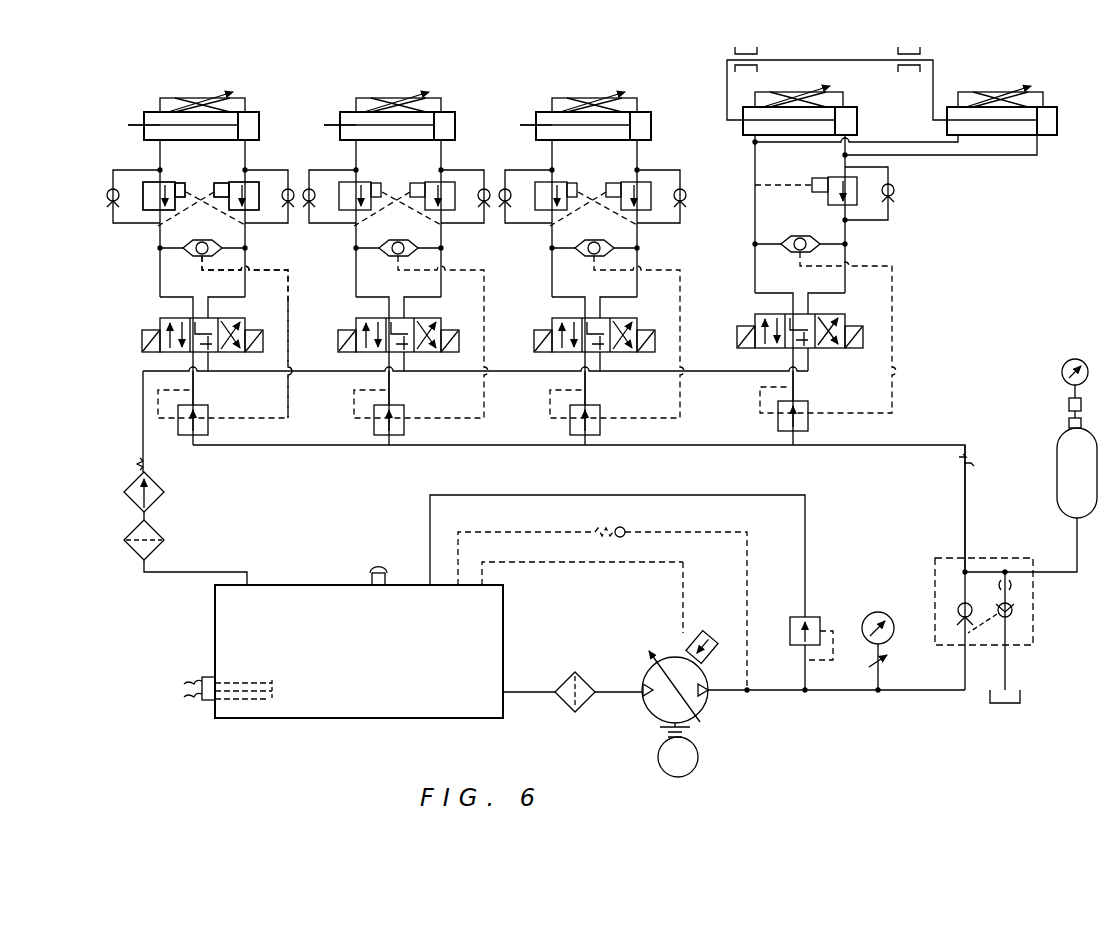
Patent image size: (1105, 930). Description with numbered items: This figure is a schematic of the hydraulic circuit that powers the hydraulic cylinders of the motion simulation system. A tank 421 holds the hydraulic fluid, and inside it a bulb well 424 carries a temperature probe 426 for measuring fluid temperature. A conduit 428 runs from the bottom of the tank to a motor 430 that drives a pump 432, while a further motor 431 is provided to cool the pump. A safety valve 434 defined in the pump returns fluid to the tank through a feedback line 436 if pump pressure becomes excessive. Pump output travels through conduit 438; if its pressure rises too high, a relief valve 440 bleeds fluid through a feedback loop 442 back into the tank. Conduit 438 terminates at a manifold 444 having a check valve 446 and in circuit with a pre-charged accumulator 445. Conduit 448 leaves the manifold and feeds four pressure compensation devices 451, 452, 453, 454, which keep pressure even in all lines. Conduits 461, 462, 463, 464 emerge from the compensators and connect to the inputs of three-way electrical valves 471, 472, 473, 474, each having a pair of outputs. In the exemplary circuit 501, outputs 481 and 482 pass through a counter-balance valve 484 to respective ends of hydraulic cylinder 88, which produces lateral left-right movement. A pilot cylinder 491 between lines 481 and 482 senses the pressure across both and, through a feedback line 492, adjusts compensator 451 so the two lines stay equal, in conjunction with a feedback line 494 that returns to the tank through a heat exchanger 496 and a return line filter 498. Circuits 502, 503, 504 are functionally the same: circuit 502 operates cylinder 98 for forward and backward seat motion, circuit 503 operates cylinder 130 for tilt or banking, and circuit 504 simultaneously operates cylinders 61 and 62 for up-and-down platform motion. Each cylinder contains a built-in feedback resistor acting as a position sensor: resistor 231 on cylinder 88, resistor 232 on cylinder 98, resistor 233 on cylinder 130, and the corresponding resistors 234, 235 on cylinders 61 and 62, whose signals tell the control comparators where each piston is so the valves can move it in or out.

The feedback resistor 231 is at (247, 100).
The feedback resistor 232 is at (443, 100).
The feedback resistor 233 is at (640, 100).
The hydraulic cylinder 234 is at (843, 100).
The hydraulic cylinder 235 is at (1043, 100).
The hydraulic cylinder 88 is at (144, 126).
The hydraulic cylinder 98 is at (340, 136).
The hydraulic cylinder 130 is at (540, 137).
The hydraulic cylinder 61 is at (745, 140).
The hydraulic cylinder 62 is at (1050, 138).
The output line 481 is at (160, 165).
The output line 482 is at (247, 160).
The counter-balance valve 484 is at (143, 238).
The pilot cylinder 491 is at (194, 246).
The circuit 501 is at (259, 262).
The circuit 502 is at (452, 244).
The circuit 503 is at (650, 244).
The circuit 504 is at (856, 240).
The feedback line 492 is at (289, 305).
The three-way electrical valve 471 is at (210, 351).
The three-way electrical valve 472 is at (406, 351).
The three-way electrical valve 473 is at (602, 351).
The three-way electrical valve 474 is at (810, 347).
The conduit 461 is at (196, 390).
The conduit 462 is at (392, 390).
The conduit 463 is at (588, 390).
The conduit 464 is at (796, 386).
The pressure compensation device 451 is at (208, 433).
The pressure compensation device 452 is at (404, 433).
The pressure compensation device 453 is at (600, 433).
The pressure compensation device 454 is at (808, 429).
The feedback line 494 is at (143, 416).
The heat exchanger 496 is at (164, 491).
The return line filter 498 is at (158, 530).
The tank 421 is at (348, 720).
The bulb well 424 is at (237, 678).
The temperature probe 426 is at (282, 678).
The conduit 428 is at (533, 691).
The motor 430 is at (585, 702).
The pump 432 is at (710, 702).
The motor 431 is at (699, 757).
The safety valve 434 is at (706, 636).
The feedback line 436 is at (651, 560).
The conduit 438 is at (782, 694).
The relief valve 440 is at (812, 617).
The feedback loop 442 is at (575, 495).
The manifold 444 is at (1036, 622).
The accumulator 445 is at (1057, 472).
The check valve 446 is at (958, 612).
The conduit 448 is at (965, 517).